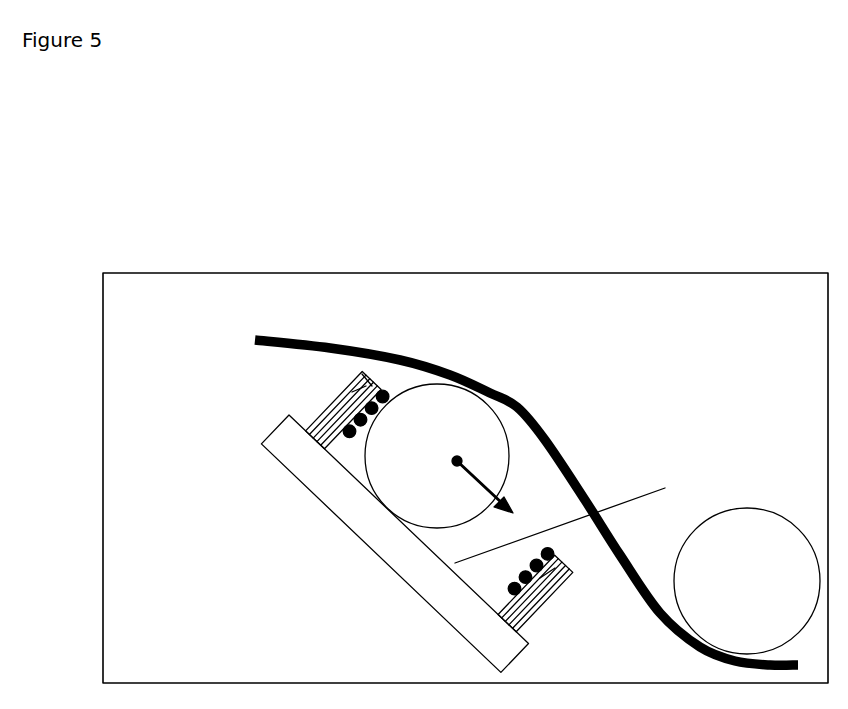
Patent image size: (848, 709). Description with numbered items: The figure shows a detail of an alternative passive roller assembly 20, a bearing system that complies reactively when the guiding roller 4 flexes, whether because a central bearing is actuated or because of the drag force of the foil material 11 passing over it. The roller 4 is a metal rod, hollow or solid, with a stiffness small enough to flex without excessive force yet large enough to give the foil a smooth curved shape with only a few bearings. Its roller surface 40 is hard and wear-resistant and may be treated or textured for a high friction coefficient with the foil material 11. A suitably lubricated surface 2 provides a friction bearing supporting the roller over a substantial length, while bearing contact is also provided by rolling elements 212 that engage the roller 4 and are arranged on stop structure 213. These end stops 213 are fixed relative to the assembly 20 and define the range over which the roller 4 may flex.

The lubricated surface 2 is at (568, 517).
The guiding roller 4 is at (472, 413).
The roller surface 40 is at (510, 455).
The foil material 11 is at (491, 381).
The passive roller assembly 20 is at (326, 509).
The rolling elements 212 is at (388, 392).
The stop structure 213 is at (361, 370).